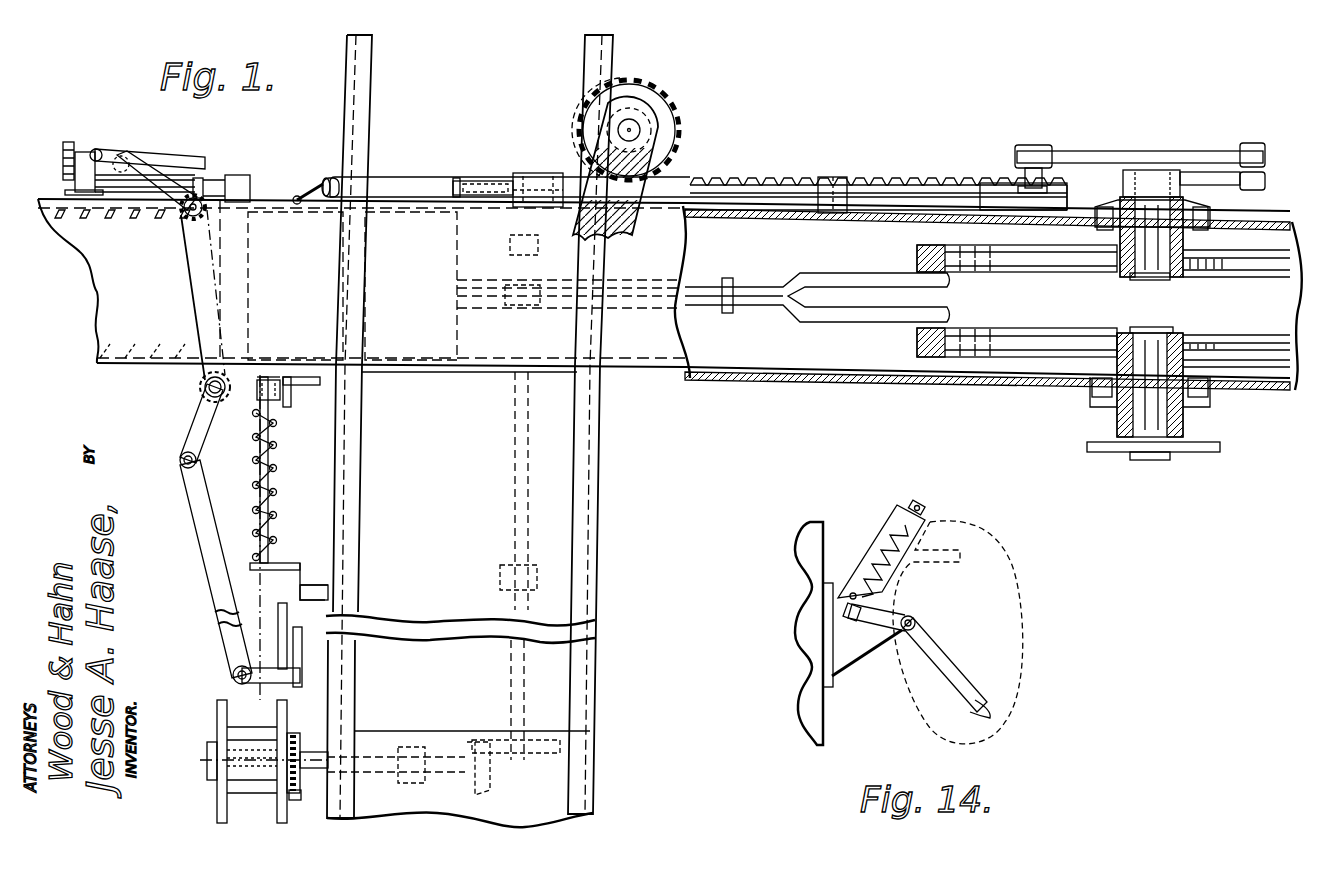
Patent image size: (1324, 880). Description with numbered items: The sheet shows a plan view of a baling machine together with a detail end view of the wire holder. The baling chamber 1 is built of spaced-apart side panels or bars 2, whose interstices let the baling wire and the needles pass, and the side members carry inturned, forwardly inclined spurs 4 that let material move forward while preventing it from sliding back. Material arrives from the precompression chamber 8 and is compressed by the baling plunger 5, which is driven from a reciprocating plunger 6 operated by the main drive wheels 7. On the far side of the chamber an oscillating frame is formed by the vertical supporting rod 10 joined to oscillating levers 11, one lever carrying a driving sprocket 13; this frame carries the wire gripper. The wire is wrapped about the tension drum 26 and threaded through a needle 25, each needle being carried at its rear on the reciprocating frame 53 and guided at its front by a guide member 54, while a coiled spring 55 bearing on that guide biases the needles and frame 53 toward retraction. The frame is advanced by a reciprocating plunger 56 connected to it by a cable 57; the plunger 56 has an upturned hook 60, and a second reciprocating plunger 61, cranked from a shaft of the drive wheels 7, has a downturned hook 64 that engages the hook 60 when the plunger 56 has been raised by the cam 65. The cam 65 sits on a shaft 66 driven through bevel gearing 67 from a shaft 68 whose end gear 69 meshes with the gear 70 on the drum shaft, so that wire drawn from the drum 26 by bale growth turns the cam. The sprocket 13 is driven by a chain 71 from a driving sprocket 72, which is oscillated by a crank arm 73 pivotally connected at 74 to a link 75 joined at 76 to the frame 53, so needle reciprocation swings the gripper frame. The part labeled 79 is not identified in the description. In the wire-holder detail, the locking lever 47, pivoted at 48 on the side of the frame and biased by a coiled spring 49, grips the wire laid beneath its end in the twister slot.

In FIG. 1, the baling chamber 1 is at (95, 300).
In FIG. 1, the side panels or bars 2 is at (110, 365).
In FIG. 1, the spurs 4 is at (108, 218).
In FIG. 1, the baling plunger 5 is at (464, 286).
In FIG. 1, the reciprocating plunger 6 is at (758, 308).
In FIG. 1, the main drive wheels 7 is at (1010, 330).
In FIG. 1, the precompression chamber 8 is at (460, 599).
In FIG. 1, the vertical supporting rod 10 is at (100, 152).
In FIG. 1, the oscillating levers 11 is at (143, 170).
In FIG. 1, the driving sprocket 13 is at (205, 212).
In FIG. 1, the needle 25 is at (270, 455).
In FIG. 1, the tension drum 26 is at (215, 787).
In FIG. 1, the reciprocating frame 53 is at (291, 563).
In FIG. 1, the guide member 54 is at (280, 400).
In FIG. 1, the coiled spring 55 is at (260, 496).
In FIG. 1, the reciprocating plunger 56 is at (400, 177).
In FIG. 1, the cable 57 is at (320, 197).
In FIG. 1, the upturned hook 60 is at (330, 178).
In FIG. 1, the second reciprocating plunger 61 is at (478, 181).
In FIG. 1, the downturned hook 64 is at (456, 178).
In FIG. 1, the cam 65 is at (498, 182).
In FIG. 1, the shaft 66 is at (516, 432).
In FIG. 1, the bevel gearing 67 is at (484, 742).
In FIG. 1, the shaft 68 is at (425, 750).
In FIG. 1, the gear 69 is at (294, 733).
In FIG. 1, the gear 70 is at (294, 790).
In FIG. 1, the chain 71 is at (186, 263).
In FIG. 1, the driving sprocket 72 is at (205, 386).
In FIG. 1, the crank arm 73 is at (196, 430).
In FIG. 1, the pivotal connection 74 is at (180, 460).
In FIG. 1, the link 75 is at (210, 571).
In FIG. 1, the connection 76 is at (235, 672).
In FIG. 1, the knob 79 is at (65, 150).
In FIG. 14, the locking lever 47 is at (958, 676).
In FIG. 14, the pivot 48 is at (908, 634).
In FIG. 14, the coiled spring 49 is at (912, 541).